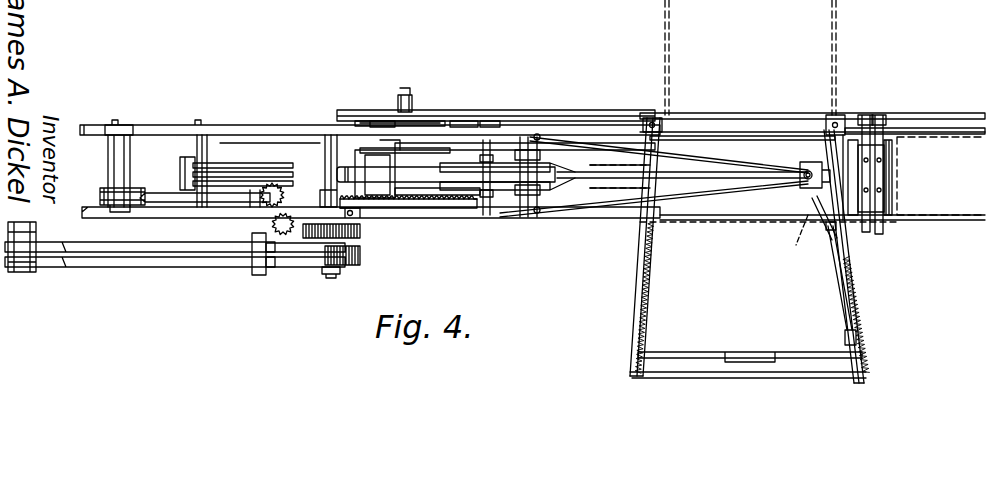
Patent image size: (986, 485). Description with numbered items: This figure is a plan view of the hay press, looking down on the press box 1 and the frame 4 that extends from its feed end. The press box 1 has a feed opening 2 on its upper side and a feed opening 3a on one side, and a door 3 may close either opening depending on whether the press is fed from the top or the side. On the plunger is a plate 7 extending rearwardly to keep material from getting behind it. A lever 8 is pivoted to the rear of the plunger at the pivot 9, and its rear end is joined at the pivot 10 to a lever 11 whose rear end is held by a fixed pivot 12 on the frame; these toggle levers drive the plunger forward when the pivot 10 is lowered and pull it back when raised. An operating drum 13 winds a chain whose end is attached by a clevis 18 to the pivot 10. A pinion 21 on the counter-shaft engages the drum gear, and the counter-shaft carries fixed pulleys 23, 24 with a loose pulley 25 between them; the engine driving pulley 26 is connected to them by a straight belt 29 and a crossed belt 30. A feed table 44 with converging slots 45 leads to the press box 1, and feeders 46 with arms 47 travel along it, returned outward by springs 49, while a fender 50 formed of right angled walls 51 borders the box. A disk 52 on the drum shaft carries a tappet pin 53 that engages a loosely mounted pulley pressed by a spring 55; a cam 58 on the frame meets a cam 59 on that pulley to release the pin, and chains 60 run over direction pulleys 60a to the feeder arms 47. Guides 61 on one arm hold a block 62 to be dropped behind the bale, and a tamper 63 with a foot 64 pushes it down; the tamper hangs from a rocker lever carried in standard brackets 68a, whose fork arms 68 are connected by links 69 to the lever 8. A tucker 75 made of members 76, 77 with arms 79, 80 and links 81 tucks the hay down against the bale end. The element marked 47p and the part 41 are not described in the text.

The press box 1 is at (654, 199).
The feed opening 2 is at (669, 155).
The door 3 is at (802, 237).
The feed opening 3a is at (748, 212).
The frame 4 is at (240, 121).
The plate 7 is at (682, 169).
The lever 8 is at (478, 215).
The pivot 9 is at (555, 214).
The pivot 10 is at (293, 171).
The lever 11 is at (252, 165).
The fixed pivot 12 is at (192, 160).
The operating drum 13 is at (345, 150).
The clevis 18 is at (340, 218).
The pinion 21 is at (350, 220).
The fixed pulley 23 is at (408, 234).
The fixed pulley 24 is at (350, 278).
The loose pulley 25 is at (365, 258).
The driving pulley 26 is at (35, 272).
The straight belt 29 is at (207, 244).
The crossed belt 30 is at (115, 266).
The arm 41 is at (165, 193).
The feed table 44 is at (748, 332).
The slots 45 is at (660, 278).
The feeders 46 is at (673, 127).
The arms 47 is at (778, 357).
The rod 47' 47p is at (830, 245).
The springs 49 is at (650, 288).
The fender 50 is at (735, 135).
The right angled walls 51 is at (646, 128).
The disk 52 is at (380, 125).
The tappet pin 53 is at (437, 125).
The spring 55 is at (410, 115).
The cam 58 is at (457, 125).
The cam 59 is at (478, 125).
The chains 60 is at (533, 112).
The direction pulleys 60a is at (657, 125).
The guides 61 is at (845, 338).
The block 62 is at (828, 195).
The tamper 63 is at (806, 180).
The foot 64 is at (806, 168).
The fork arms 68 is at (527, 215).
The standard brackets 68a is at (500, 137).
The links 69 is at (462, 162).
The tucker 75 is at (855, 162).
The tucker member 76 is at (858, 176).
The tucker member 77 is at (887, 193).
The arm 79 is at (867, 125).
The arm 80 is at (880, 120).
The links 81 is at (886, 130).